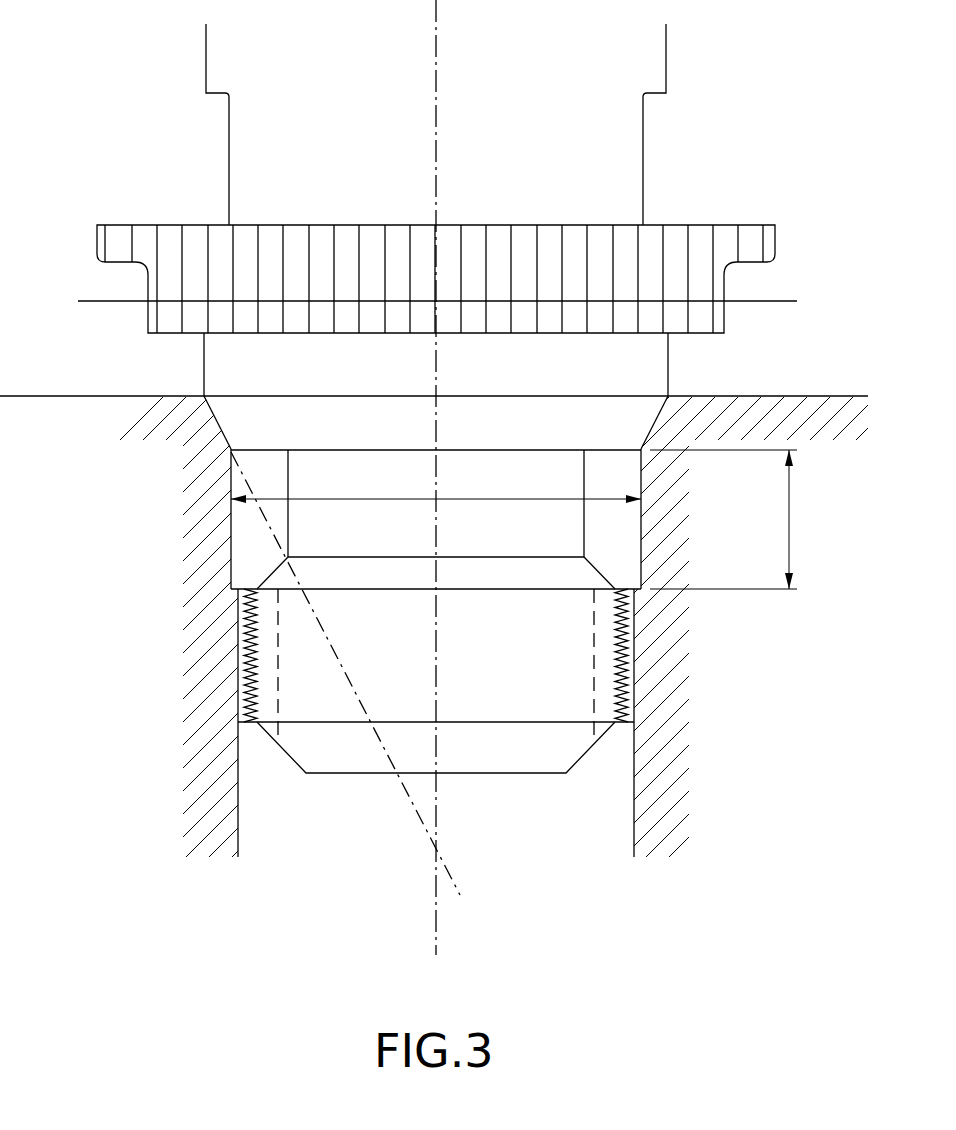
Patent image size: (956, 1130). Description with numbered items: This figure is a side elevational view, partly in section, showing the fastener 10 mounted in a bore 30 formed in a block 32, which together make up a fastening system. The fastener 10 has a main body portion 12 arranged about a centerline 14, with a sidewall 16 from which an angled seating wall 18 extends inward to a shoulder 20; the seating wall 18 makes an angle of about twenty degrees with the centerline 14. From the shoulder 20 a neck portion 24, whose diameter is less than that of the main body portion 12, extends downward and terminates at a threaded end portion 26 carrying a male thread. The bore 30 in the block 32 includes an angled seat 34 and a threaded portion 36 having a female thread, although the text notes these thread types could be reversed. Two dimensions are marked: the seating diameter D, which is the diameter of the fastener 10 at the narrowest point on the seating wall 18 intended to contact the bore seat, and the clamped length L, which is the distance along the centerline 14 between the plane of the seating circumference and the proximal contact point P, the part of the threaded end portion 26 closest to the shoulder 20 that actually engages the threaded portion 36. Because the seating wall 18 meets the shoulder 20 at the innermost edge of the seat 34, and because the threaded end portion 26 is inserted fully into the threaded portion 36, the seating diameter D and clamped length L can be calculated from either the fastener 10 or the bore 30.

The fastener 10 is at (163, 156).
The main body portion 12 is at (628, 183).
The centerline 14 is at (437, 128).
The sidewall 16 is at (668, 350).
The angled seating wall 18 is at (217, 420).
The shoulder 20 is at (607, 452).
The neck portion 24 is at (563, 537).
The threaded end portion 26 is at (612, 690).
The bore 30 is at (246, 542).
The block 32 is at (98, 514).
The angled seat 34 is at (226, 449).
The threaded portion 36 is at (244, 628).
The proximal contact point P is at (258, 590).
The seating diameter D is at (436, 485).
The clamped length L is at (731, 519).